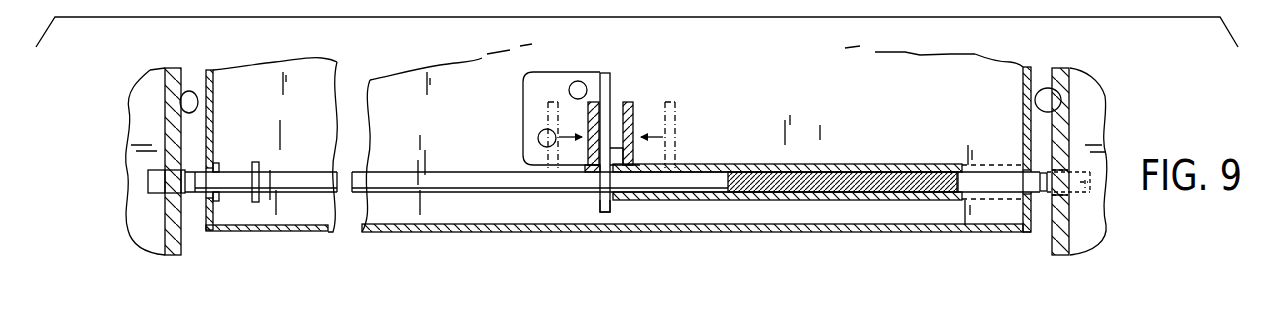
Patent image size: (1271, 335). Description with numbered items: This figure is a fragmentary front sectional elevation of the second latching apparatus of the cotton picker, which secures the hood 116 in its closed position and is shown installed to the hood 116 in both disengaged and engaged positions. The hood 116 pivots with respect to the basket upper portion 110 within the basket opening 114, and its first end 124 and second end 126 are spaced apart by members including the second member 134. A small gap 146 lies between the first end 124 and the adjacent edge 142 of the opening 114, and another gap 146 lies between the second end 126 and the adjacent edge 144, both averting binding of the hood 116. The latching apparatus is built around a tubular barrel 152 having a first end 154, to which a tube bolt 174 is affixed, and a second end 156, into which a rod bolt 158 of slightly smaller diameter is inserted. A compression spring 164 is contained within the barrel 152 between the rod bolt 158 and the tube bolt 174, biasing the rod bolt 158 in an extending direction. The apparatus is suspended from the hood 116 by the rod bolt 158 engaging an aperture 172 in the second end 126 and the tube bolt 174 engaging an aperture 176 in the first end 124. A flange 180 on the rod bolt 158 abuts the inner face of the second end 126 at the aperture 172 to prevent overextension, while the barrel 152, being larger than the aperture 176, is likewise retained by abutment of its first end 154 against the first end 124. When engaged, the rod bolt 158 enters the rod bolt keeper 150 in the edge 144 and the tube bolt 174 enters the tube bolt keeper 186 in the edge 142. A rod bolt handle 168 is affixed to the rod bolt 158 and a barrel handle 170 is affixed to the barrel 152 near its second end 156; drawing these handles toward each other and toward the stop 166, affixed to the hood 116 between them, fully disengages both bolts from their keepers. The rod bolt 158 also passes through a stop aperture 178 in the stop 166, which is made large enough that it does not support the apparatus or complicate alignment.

The basket upper portion 110 is at (125, 128).
The opening 114 is at (370, 83).
The hood 116 is at (705, 233).
The first end 124 is at (1022, 118).
The second end 126 is at (214, 80).
The second member 134 is at (414, 119).
The edge 142 is at (1066, 110).
The edge 144 is at (186, 95).
The gap 146 is at (197, 78).
The rod bolt keeper 150 is at (165, 205).
The barrel 152 is at (797, 164).
The first end 154 is at (1025, 231).
The second end 156 is at (598, 168).
The rod bolt 158 is at (233, 170).
The compression spring 164 is at (918, 172).
The stop 166 is at (610, 85).
The rod bolt handle 168 is at (595, 101).
The barrel handle 170 is at (635, 96).
The aperture 172 is at (200, 203).
The tube bolt 174 is at (1002, 165).
The aperture 176 is at (1034, 199).
The stop aperture 178 is at (601, 197).
The flange 180 is at (259, 163).
The tube bolt keeper 186 is at (1063, 163).